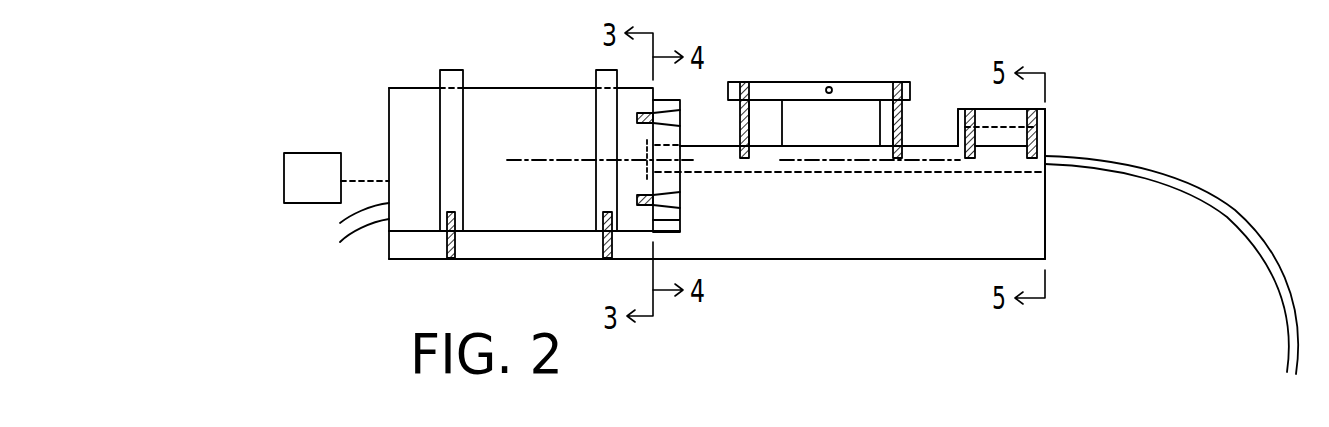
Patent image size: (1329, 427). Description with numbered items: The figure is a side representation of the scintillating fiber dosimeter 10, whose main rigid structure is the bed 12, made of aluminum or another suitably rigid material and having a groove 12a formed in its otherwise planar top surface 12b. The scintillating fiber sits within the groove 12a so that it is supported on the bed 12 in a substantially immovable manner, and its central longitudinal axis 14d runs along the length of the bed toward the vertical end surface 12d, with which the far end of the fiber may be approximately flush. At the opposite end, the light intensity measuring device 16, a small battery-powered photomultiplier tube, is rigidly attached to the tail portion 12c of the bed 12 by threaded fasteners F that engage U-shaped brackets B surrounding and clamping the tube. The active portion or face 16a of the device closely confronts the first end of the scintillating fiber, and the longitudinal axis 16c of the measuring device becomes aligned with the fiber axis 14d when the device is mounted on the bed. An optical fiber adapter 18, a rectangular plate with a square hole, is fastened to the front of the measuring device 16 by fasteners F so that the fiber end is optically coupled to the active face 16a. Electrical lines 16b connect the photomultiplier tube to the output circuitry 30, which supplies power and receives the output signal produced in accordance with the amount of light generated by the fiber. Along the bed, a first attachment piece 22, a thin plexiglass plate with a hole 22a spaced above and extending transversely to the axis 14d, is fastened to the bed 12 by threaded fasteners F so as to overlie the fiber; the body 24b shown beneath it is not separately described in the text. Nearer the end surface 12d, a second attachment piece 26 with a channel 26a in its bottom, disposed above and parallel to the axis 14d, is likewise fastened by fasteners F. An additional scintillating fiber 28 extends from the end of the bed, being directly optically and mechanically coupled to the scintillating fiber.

The scintillating fiber dosimeter 10 is at (903, 353).
The bed 12 is at (860, 220).
The groove 12a is at (932, 177).
The top surface 12b is at (927, 146).
The tail portion 12c is at (418, 247).
The vertical end surface 12d is at (1045, 207).
The central longitudinal axis 14d is at (858, 162).
The light intensity measuring device 16 is at (482, 172).
The active portion or face 16a is at (645, 182).
The electrical lines 16b is at (380, 133).
The longitudinal axis 16c is at (583, 160).
The optical fiber adapter 18 is at (667, 185).
The first attachment piece 22 is at (765, 95).
The hole 22a is at (832, 88).
The drive body 24b is at (810, 125).
The second attachment piece 26 is at (995, 120).
The channel 26a is at (1040, 140).
The additional scintillating fiber 28 is at (1193, 185).
The output circuitry 30 is at (336, 178).
The U-shaped brackets B is at (453, 140).
The threaded fasteners F is at (740, 125).